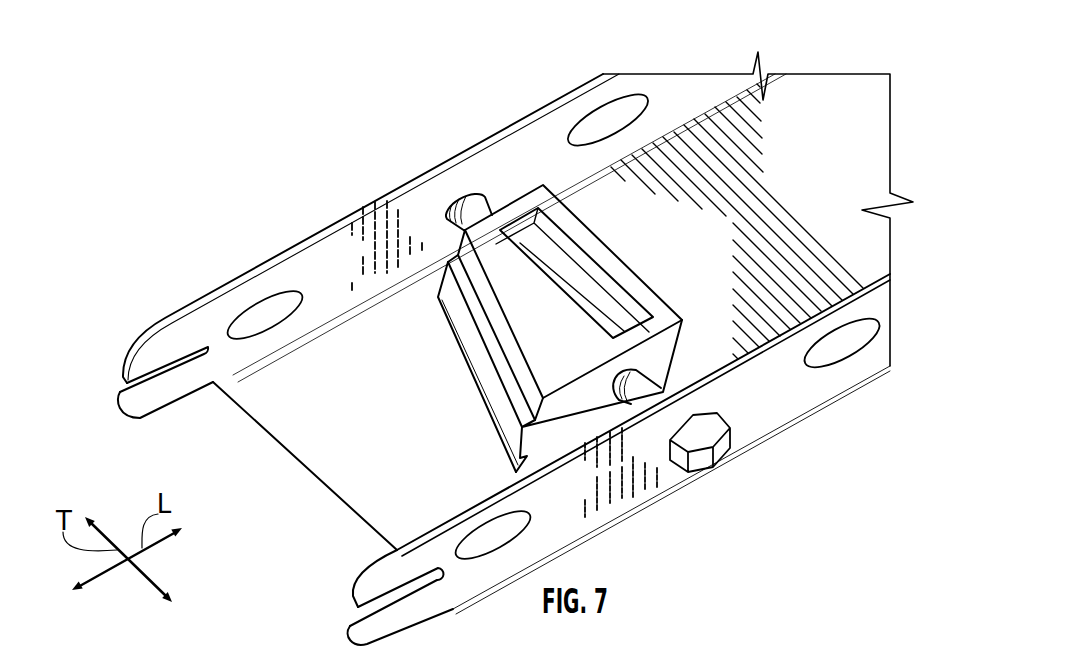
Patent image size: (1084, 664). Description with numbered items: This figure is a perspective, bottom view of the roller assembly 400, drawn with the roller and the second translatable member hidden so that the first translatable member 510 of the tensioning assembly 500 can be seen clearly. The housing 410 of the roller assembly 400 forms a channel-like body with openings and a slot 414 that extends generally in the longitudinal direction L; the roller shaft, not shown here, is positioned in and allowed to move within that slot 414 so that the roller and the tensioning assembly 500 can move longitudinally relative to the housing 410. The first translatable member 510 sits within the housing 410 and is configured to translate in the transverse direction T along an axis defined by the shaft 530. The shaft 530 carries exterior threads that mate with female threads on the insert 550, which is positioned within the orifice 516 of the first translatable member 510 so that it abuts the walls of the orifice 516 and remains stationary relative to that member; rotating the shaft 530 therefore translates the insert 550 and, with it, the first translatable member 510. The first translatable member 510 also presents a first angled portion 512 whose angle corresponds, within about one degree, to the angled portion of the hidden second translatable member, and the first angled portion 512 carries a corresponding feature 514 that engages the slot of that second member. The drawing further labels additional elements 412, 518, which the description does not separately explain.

The roller assembly 400 is at (500, 322).
The housing 410 is at (843, 163).
The hole 412 is at (624, 118).
The slot 414 is at (108, 383).
The tensioning assembly 500 is at (548, 286).
The first translatable member 510 is at (667, 343).
The first angled portion 512 is at (498, 419).
The corresponding feature 514 is at (490, 392).
The orifice 516 is at (545, 228).
The locating pin 518 is at (624, 400).
The shaft 530 is at (655, 368).
The insert 550 is at (563, 270).